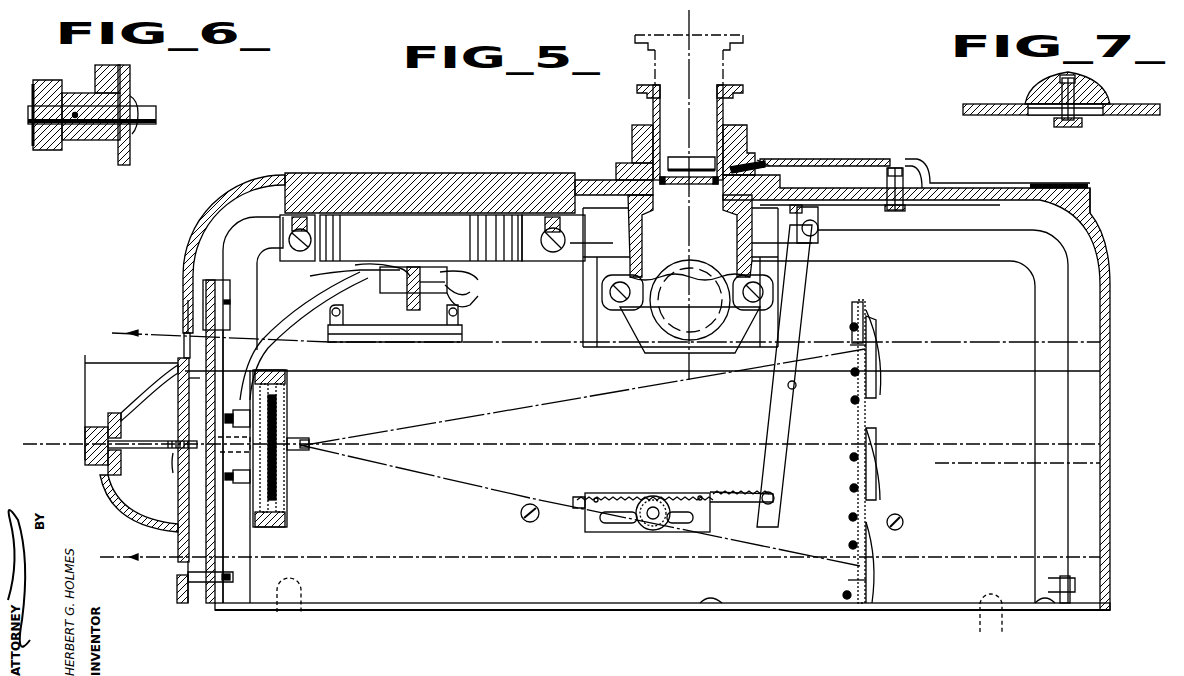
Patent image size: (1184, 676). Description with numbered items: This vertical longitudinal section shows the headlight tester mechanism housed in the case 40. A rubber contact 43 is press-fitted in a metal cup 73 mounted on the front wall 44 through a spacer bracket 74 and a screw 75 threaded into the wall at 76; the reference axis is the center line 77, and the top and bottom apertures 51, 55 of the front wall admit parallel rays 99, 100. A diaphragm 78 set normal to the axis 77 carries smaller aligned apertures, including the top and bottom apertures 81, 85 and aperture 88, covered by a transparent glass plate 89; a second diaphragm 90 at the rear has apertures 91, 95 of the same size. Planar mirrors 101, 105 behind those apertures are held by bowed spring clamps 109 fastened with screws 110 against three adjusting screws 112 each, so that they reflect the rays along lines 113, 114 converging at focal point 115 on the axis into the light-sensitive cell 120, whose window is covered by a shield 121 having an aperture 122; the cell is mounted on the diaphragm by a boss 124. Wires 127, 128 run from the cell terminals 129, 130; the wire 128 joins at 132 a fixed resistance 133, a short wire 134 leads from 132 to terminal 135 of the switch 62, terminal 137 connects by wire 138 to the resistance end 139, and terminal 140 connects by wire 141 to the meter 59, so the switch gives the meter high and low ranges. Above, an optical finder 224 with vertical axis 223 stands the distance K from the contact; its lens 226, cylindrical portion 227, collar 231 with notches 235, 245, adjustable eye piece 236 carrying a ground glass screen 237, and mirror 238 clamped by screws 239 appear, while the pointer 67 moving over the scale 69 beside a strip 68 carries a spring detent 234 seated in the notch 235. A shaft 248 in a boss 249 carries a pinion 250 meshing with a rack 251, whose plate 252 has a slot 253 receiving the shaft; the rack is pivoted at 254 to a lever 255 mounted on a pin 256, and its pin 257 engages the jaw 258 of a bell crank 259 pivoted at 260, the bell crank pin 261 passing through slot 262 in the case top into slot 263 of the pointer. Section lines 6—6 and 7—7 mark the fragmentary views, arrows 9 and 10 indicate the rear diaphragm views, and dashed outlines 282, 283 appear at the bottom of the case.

In FIG. 7, the case 40 is at (1132, 104).
In FIG. 5, the case 40 is at (183, 230).
In FIG. 5, the rubber contact 43 is at (85, 455).
In FIG. 5, the front wall 44 is at (170, 360).
In FIG. 5, the aperture 51 is at (183, 318).
In FIG. 5, the aperture 55 is at (177, 585).
In FIG. 5, the meter 59 is at (432, 238).
In FIG. 5, the switch 62 is at (400, 296).
In FIG. 7, the pointer 67 is at (1040, 84).
In FIG. 5, the pointer 67 is at (840, 159).
In FIG. 5, the top strip 68 is at (1070, 183).
In FIG. 5, the scale 69 is at (1092, 190).
In FIG. 5, the metal cup 73 is at (112, 413).
In FIG. 5, the spacer bracket 74 is at (150, 492).
In FIG. 5, the screw 75 is at (150, 452).
In FIG. 5, the threaded point 76 is at (172, 473).
In FIG. 5, the reference axis 77 is at (30, 439).
In FIG. 5, the diaphragm 78 is at (215, 505).
In FIG. 5, the diaphragm aperture 81 is at (242, 310).
In FIG. 5, the diaphragm aperture 85 is at (233, 575).
In FIG. 5, the diaphragm aperture 88 is at (200, 380).
In FIG. 5, the transparent glass plate 89 is at (205, 535).
In FIG. 5, the second diaphragm 90 is at (858, 445).
In FIG. 5, the rear diaphragm aperture 91 is at (848, 352).
In FIG. 5, the rear diaphragm aperture 95 is at (848, 582).
In FIG. 5, the parallel ray 99 is at (118, 333).
In FIG. 5, the parallel ray 100 is at (100, 557).
In FIG. 5, the planar mirror 101 is at (868, 345).
In FIG. 5, the planar mirror 105 is at (878, 590).
In FIG. 5, the bowed spring clamp 109 is at (880, 390).
In FIG. 5, the screw 110 is at (882, 370).
In FIG. 5, the adjusting screw 112 is at (838, 459).
In FIG. 5, the reflected ray line 113 is at (545, 412).
In FIG. 5, the reflected ray line 114 is at (525, 488).
In FIG. 5, the focal point 115 is at (300, 436).
In FIG. 5, the light-sensitive cell 120 is at (287, 514).
In FIG. 5, the shield 121 is at (285, 492).
In FIG. 5, the aperture 122 is at (287, 470).
In FIG. 5, the boss 124 is at (213, 435).
In FIG. 5, the wire 127 is at (262, 312).
In FIG. 5, the wire 128 is at (260, 346).
In FIG. 5, the terminal 129 is at (236, 485).
In FIG. 5, the terminal 130 is at (238, 410).
In FIG. 5, the connection point 132 is at (340, 305).
In FIG. 5, the fixed resistance 133 is at (395, 342).
In FIG. 5, the short wire 134 is at (352, 272).
In FIG. 5, the switch terminal 135 is at (384, 255).
In FIG. 5, the switch terminal 137 is at (478, 276).
In FIG. 5, the wire 138 is at (478, 300).
In FIG. 5, the resistance end 139 is at (458, 312).
In FIG. 5, the switch terminal 140 is at (472, 292).
In FIG. 5, the wire 141 is at (435, 298).
In FIG. 5, the vertical axis 223 is at (691, 28).
In FIG. 5, the optical finder 224 is at (632, 135).
In FIG. 5, the lens 226 is at (762, 246).
In FIG. 5, the cylindrical portion 227 is at (690, 182).
In FIG. 5, the collar 231 is at (746, 135).
In FIG. 5, the spring detent 234 is at (770, 162).
In FIG. 5, the notch 235 is at (760, 160).
In FIG. 5, the adjustable eye piece 236 is at (745, 90).
In FIG. 5, the ground glass screen 237 is at (672, 170).
In FIG. 5, the mirror 238 is at (670, 353).
In FIG. 5, the screws 239 is at (602, 298).
In FIG. 5, the notch 245 is at (616, 165).
In FIG. 6, the shaft 248 is at (158, 118).
In FIG. 5, the shaft 248 is at (650, 530).
In FIG. 6, the boss 249 is at (45, 80).
In FIG. 6, the pinion 250 is at (75, 93).
In FIG. 5, the pinion 250 is at (645, 485).
In FIG. 6, the rack 251 is at (108, 65).
In FIG. 5, the rack 251 is at (742, 492).
In FIG. 6, the plate 252 is at (118, 160).
In FIG. 5, the plate 252 is at (710, 522).
In FIG. 6, the slot 253 is at (140, 96).
In FIG. 5, the slot 253 is at (604, 530).
In FIG. 5, the pivotal connection 254 is at (776, 498).
In FIG. 5, the lever 255 is at (777, 444).
In FIG. 5, the pin 256 is at (788, 388).
In FIG. 5, the pin 257 is at (812, 255).
In FIG. 5, the jaw 258 is at (820, 236).
In FIG. 7, the bell crank 259 is at (1060, 127).
In FIG. 5, the bell crank 259 is at (862, 204).
In FIG. 5, the pivot 260 is at (790, 212).
In FIG. 7, the pin 261 is at (1060, 114).
In FIG. 5, the pin 261 is at (906, 176).
In FIG. 7, the slot 262 is at (1098, 115).
In FIG. 5, the slot 262 is at (915, 205).
In FIG. 7, the slot 263 is at (1076, 80).
In FIG. 5, the slot 263 is at (886, 172).
In FIG. 5, the foot 282 is at (980, 627).
In FIG. 5, the foot 283 is at (300, 616).
In FIG. 5, the section line 6— 6 is at (655, 475).
In FIG. 5, the section line 7— 7 is at (893, 128).
In FIG. 5, the view arrows 9— 9 is at (810, 292).
In FIG. 5, the view arrows 10— 10 is at (948, 290).
In FIG. 5, the distance K is at (642, 371).